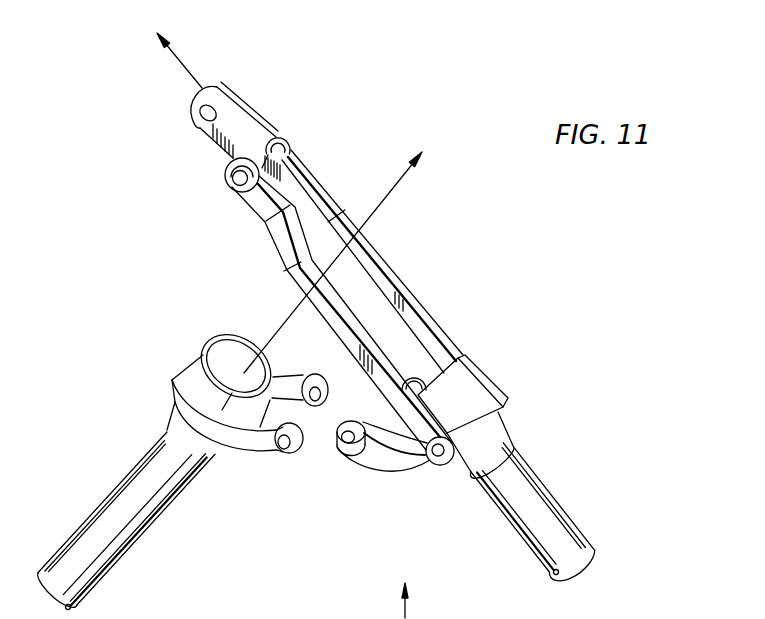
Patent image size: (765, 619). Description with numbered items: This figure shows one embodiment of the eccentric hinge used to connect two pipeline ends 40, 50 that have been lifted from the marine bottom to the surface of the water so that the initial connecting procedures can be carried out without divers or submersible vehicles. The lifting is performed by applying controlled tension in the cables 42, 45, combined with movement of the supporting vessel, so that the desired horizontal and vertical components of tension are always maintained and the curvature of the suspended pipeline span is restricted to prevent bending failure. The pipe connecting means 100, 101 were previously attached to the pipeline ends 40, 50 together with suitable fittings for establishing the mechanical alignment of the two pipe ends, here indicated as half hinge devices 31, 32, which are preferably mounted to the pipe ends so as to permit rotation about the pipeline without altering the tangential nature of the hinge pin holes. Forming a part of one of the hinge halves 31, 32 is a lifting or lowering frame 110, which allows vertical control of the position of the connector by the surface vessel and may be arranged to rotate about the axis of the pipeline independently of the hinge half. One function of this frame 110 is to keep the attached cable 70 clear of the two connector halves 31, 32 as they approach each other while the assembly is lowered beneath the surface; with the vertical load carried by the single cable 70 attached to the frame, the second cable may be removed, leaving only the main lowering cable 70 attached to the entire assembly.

The half hinge device 31 is at (380, 460).
The half hinge device 32 is at (170, 393).
The pipeline end 40 is at (549, 510).
The cable 42 is at (398, 183).
The cable 45 is at (186, 68).
The pipeline end 50 is at (113, 544).
The cable 70 is at (402, 605).
The pipe connecting means 100 is at (467, 380).
The pipe connecting means 101 is at (203, 350).
The lifting or lowering frame 110 is at (395, 277).